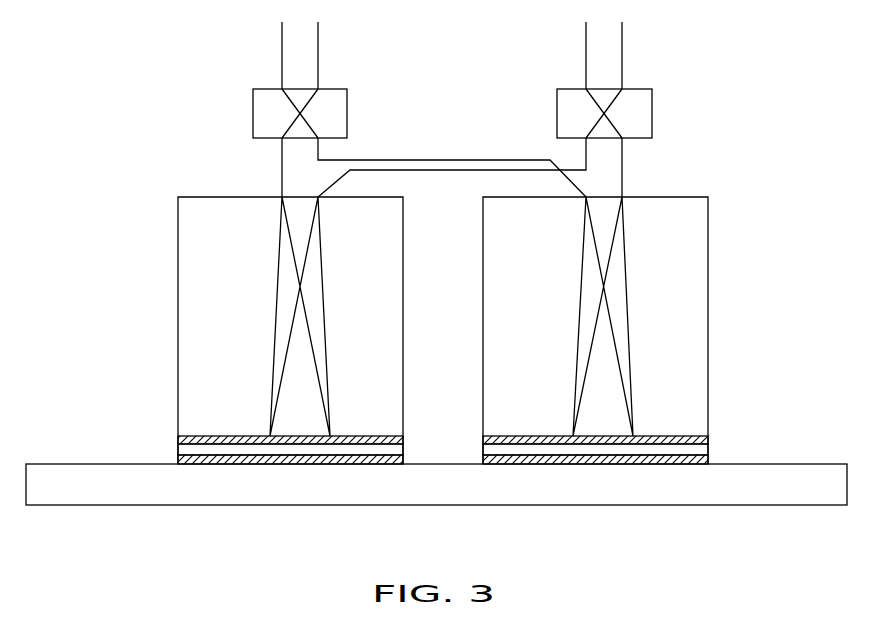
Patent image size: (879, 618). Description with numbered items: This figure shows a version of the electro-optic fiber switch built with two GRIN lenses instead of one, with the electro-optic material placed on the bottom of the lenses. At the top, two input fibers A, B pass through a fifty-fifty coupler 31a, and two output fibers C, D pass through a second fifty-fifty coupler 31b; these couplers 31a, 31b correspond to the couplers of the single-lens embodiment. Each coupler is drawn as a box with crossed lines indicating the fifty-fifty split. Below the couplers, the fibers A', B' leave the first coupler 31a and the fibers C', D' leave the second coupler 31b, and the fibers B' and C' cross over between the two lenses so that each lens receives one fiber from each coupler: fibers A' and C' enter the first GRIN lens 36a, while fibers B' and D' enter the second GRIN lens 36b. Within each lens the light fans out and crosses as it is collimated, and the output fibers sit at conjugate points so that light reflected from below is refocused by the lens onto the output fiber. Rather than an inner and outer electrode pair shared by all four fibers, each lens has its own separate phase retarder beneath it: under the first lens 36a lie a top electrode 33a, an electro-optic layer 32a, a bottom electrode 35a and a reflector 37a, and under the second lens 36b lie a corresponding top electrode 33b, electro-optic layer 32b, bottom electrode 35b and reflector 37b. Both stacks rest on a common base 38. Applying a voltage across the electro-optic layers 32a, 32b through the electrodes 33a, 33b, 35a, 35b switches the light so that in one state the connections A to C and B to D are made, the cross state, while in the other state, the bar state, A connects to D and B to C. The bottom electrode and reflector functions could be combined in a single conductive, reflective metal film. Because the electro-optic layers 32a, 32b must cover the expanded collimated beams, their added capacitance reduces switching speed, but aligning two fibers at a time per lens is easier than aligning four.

The coupler 31a is at (253, 112).
The coupler 31b is at (652, 112).
The electro-optic layer 32a is at (223, 452).
The electro-optic layer 32b is at (662, 452).
The top electrode 33a is at (188, 437).
The top electrode 33b is at (698, 437).
The bottom electrode 35a is at (270, 497).
The bottom electrode 35b is at (599, 497).
The GRIN lens 36a is at (387, 328).
The GRIN lens 36b is at (692, 328).
The reflector 37a is at (263, 465).
The reflector 37b is at (590, 465).
The base 38 is at (460, 495).
The input fiber A is at (261, 55).
The input fiber B is at (279, 55).
The output fiber C is at (627, 55).
The output fiber D is at (646, 55).
The fiber A' is at (259, 167).
The fiber B' is at (452, 163).
The fiber C' is at (452, 162).
The fiber D' is at (652, 167).